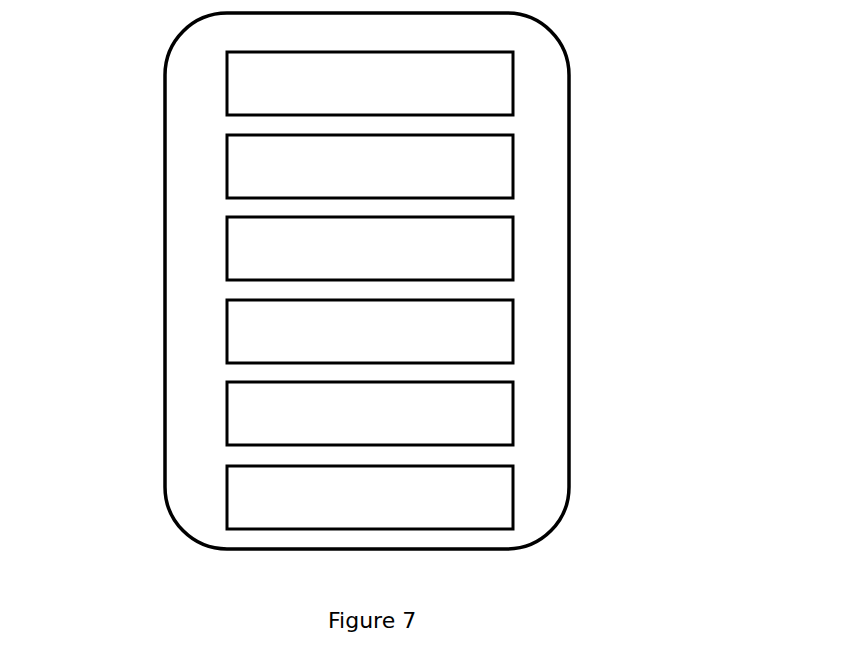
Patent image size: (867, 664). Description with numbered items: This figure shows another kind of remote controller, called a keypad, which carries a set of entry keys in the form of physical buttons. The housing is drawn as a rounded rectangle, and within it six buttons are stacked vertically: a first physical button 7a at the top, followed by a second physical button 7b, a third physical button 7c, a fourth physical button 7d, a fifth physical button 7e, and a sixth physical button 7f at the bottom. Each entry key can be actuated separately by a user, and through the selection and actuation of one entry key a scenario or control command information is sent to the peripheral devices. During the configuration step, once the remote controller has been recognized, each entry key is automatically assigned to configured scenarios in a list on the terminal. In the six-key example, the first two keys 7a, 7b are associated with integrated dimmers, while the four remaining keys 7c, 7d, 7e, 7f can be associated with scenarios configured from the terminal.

The physical button 7a is at (488, 78).
The physical button 7b is at (250, 162).
The physical button 7c is at (501, 243).
The physical button 7d is at (255, 330).
The physical button 7e is at (500, 403).
The physical button 7f is at (250, 490).